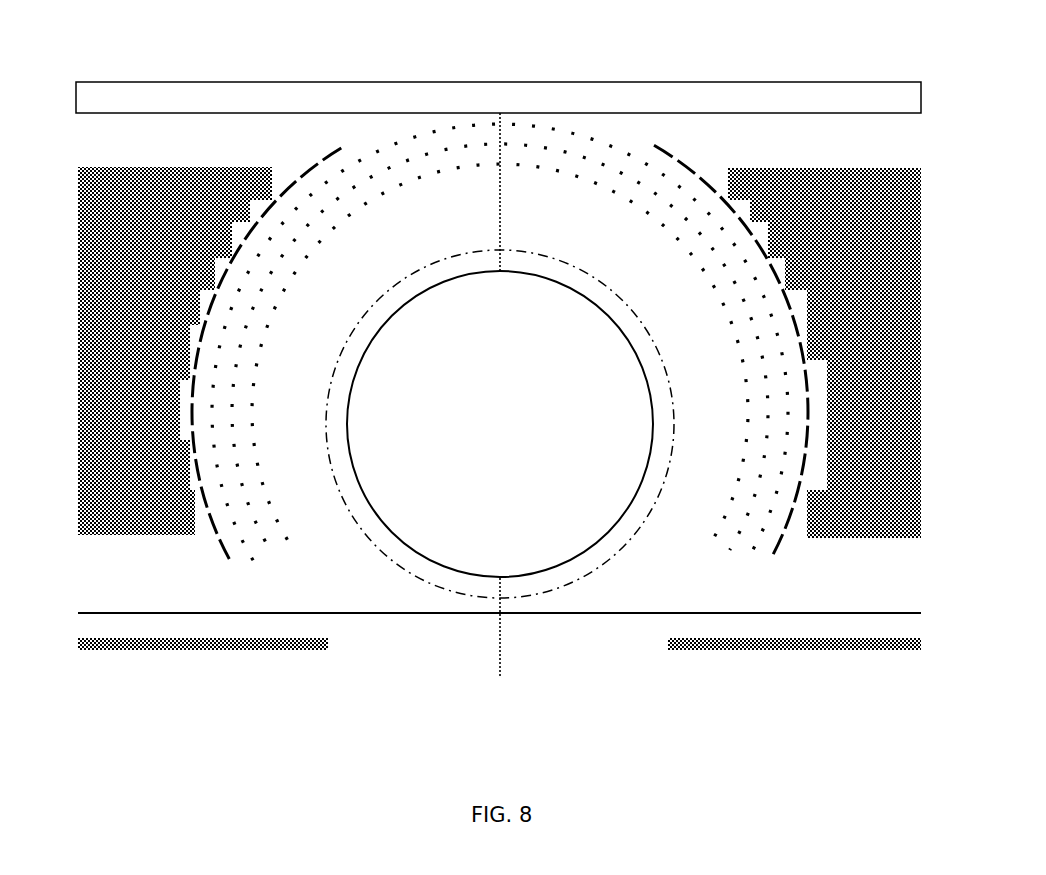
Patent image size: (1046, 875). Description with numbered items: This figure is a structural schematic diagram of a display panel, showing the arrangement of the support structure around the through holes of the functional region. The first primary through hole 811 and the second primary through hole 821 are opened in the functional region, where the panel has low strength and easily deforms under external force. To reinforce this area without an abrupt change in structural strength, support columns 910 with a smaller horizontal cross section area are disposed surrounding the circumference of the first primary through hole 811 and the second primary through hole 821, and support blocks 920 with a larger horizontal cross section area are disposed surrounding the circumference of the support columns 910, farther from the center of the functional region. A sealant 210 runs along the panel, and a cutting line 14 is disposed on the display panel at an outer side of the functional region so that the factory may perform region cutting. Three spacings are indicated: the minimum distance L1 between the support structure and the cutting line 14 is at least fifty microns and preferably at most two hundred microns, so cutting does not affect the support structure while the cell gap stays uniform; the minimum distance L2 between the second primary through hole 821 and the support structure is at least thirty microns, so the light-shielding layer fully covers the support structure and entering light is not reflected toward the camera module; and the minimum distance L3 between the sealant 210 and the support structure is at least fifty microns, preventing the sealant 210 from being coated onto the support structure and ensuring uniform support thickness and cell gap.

The sealant 210 is at (638, 104).
The support column 910 is at (665, 217).
The support block 920 is at (750, 240).
The first primary through hole 811 is at (447, 568).
The second primary through hole 821 is at (558, 585).
The cutting line 14 is at (647, 613).
The minimum distance between the support structure and the cutting line L1 is at (273, 558).
The minimum distance between the second primary through hole and the support structu L2 is at (352, 343).
The minimum distance between the sealant and the support structure L3 is at (438, 82).